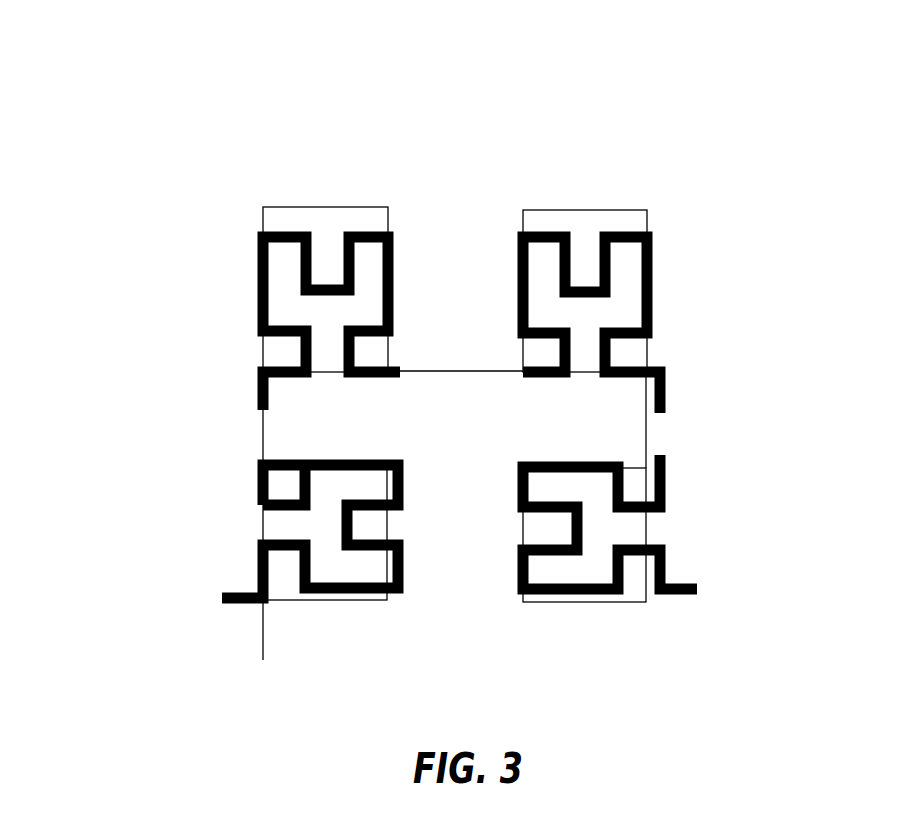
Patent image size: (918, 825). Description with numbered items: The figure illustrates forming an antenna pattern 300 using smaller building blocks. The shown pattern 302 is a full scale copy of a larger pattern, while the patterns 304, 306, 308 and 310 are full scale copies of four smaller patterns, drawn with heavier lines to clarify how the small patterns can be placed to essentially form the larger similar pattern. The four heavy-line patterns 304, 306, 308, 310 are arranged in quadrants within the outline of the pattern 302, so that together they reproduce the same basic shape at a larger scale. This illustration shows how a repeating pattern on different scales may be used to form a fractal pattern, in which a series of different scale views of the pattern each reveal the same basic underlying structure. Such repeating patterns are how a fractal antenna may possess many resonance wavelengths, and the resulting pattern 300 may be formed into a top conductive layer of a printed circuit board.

The pattern 300 is at (176, 120).
The pattern 302 is at (592, 198).
The pattern 304 is at (237, 303).
The pattern 306 is at (657, 308).
The pattern 308 is at (235, 519).
The pattern 310 is at (672, 522).